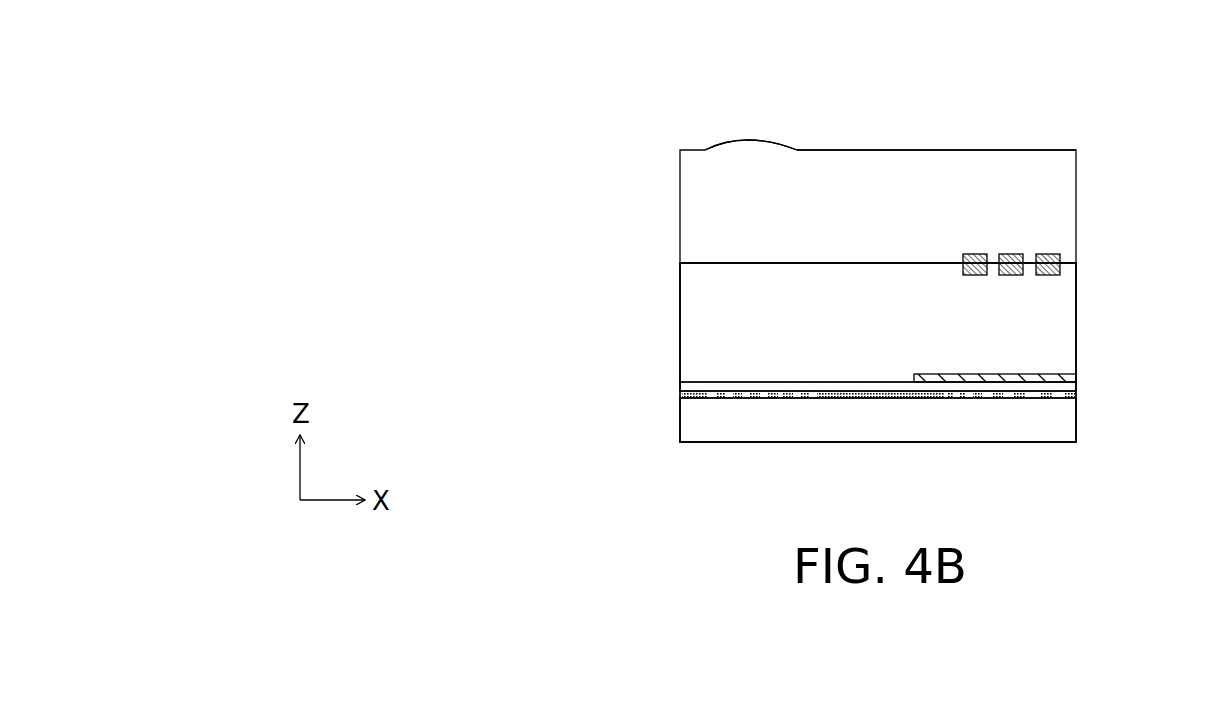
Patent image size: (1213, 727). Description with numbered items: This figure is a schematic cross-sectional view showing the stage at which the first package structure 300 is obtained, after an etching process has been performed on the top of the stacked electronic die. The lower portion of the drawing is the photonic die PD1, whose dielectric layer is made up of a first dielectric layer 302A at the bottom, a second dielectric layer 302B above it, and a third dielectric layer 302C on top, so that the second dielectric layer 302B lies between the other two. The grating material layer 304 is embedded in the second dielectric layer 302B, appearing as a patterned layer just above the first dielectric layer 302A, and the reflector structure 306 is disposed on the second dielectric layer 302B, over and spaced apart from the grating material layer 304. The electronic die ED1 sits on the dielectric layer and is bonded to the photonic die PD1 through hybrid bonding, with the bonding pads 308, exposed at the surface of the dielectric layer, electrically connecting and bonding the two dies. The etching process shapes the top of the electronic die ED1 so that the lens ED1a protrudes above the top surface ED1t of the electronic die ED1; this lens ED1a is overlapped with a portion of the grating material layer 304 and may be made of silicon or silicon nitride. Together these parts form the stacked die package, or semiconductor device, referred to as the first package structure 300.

The first package structure 300 is at (666, 102).
The electronic die ED1 is at (1069, 170).
The lens ED1a is at (745, 152).
The top surface of the electronic die ED1t is at (951, 147).
The bonding pads 308 is at (1060, 270).
The third dielectric layer 302C is at (1069, 300).
The reflector structure 306 is at (1057, 378).
The second dielectric layer 302B is at (1076, 386).
The grating material layer 304 is at (1068, 395).
The first dielectric layer 302A is at (1060, 435).
The photonic die PD1 is at (663, 265).